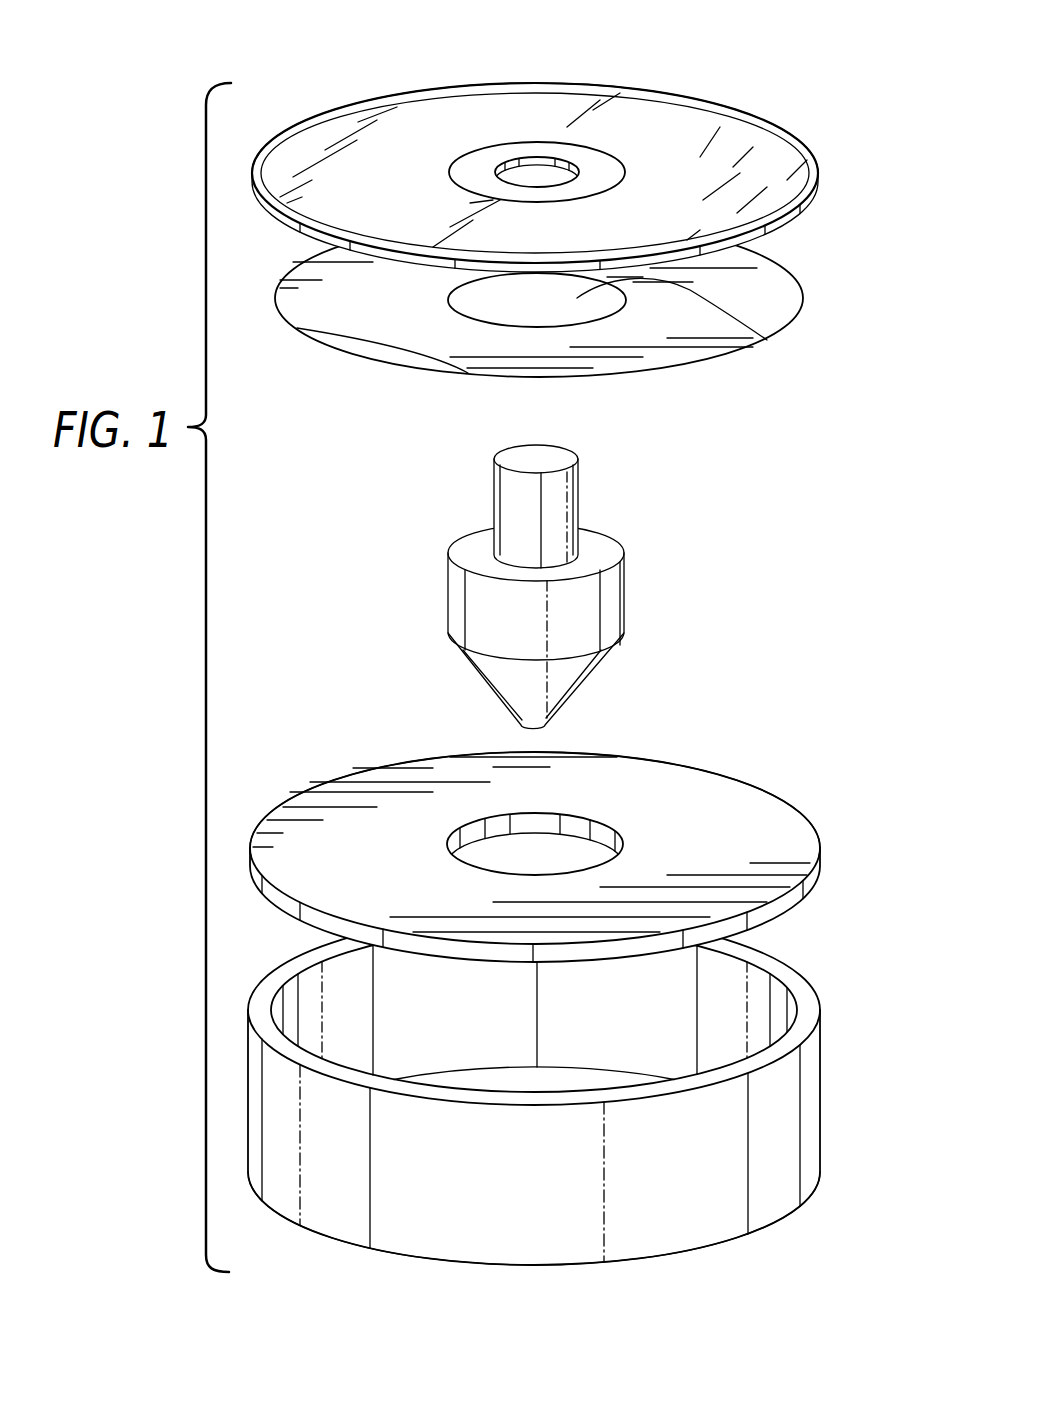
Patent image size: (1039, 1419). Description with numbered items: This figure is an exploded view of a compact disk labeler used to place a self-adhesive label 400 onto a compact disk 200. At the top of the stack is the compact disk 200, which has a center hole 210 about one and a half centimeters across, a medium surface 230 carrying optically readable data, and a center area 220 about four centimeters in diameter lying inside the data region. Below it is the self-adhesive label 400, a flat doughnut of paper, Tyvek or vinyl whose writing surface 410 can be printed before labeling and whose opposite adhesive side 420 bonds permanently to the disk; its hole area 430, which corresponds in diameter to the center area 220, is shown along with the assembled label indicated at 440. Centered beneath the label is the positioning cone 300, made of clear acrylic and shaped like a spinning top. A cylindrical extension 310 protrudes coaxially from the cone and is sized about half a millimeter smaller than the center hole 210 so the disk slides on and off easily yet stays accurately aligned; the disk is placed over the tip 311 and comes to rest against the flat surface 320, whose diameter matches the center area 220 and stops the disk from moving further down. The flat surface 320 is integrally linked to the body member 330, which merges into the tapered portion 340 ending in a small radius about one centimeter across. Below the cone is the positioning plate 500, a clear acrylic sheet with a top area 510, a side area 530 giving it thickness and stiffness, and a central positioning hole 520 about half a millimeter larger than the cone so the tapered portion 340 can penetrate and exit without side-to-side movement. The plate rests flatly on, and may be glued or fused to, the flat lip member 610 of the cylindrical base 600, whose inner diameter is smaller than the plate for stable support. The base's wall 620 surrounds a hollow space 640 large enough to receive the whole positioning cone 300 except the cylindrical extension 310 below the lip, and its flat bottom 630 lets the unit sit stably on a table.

The compact disk 200 is at (392, 118).
The center hole 210 is at (530, 132).
The center area 220 is at (577, 158).
The medium surface 230 is at (700, 160).
The positioning cone 300 is at (465, 610).
The cylindrical extension 310 is at (558, 508).
The tip 311 is at (514, 459).
The flat surface 320 is at (600, 545).
The body member 330 is at (588, 605).
The tapered portion 340 is at (520, 684).
The self-adhesive label 400 is at (302, 295).
The writing surface 410 is at (760, 280).
The adhesive side 420 is at (405, 356).
The hole area 430 is at (760, 338).
The sheet assembly 440 is at (720, 370).
The positioning plate 500 is at (415, 785).
The top area 510 is at (765, 840).
The positioning hole 520 is at (535, 848).
The side area 530 is at (770, 915).
The cylindrical base 600 is at (358, 1165).
The flat lip member 610 is at (808, 1018).
The wall 620 is at (780, 1120).
The flat bottom 630 is at (737, 1250).
The hollow space 640 is at (312, 1005).